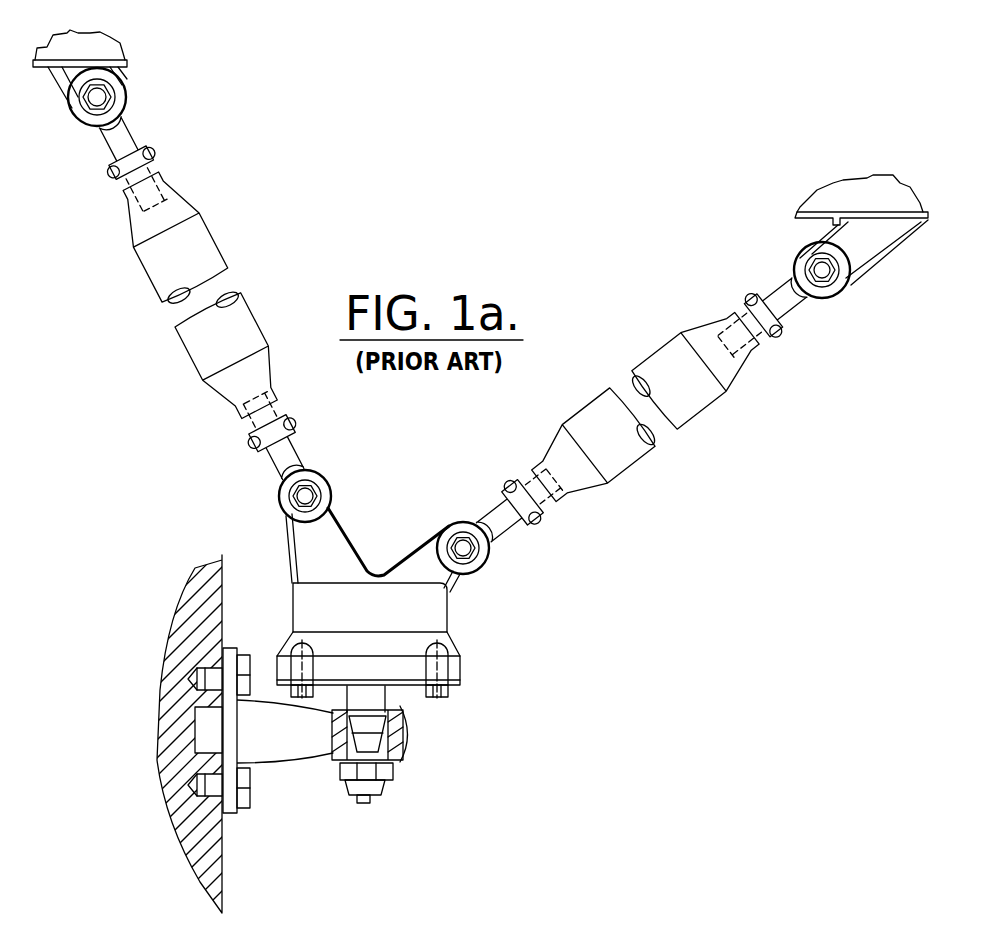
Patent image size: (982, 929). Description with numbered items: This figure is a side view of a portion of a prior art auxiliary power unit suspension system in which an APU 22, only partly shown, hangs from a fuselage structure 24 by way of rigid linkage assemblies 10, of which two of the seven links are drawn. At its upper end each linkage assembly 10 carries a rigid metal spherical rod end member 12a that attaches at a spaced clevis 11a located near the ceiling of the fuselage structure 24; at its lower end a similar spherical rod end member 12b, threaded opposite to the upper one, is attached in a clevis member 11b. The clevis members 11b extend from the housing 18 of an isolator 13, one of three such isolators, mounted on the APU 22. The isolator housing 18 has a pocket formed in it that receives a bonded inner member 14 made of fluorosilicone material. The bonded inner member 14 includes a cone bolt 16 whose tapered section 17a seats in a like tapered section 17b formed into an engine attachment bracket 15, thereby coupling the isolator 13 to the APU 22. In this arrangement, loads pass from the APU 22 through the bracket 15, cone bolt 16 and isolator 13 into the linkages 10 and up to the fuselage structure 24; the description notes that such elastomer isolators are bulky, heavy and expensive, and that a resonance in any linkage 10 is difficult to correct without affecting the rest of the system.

The rigid linkage assembly 10 is at (258, 302).
The clevis 11a is at (118, 95).
The clevis member 11b is at (335, 500).
The spherical rod end member 12a is at (122, 128).
The spherical rod end member 12b is at (297, 458).
The isolator 13 is at (435, 620).
The bonded inner member 14 is at (385, 702).
The engine attachment bracket 15 is at (280, 745).
The cone bolt 16 is at (380, 803).
The tapered section 17a is at (377, 742).
The tapered section 17b is at (340, 758).
The isolator housing 18 is at (313, 602).
The APU 22 is at (217, 857).
The fuselage structure 24 is at (100, 46).